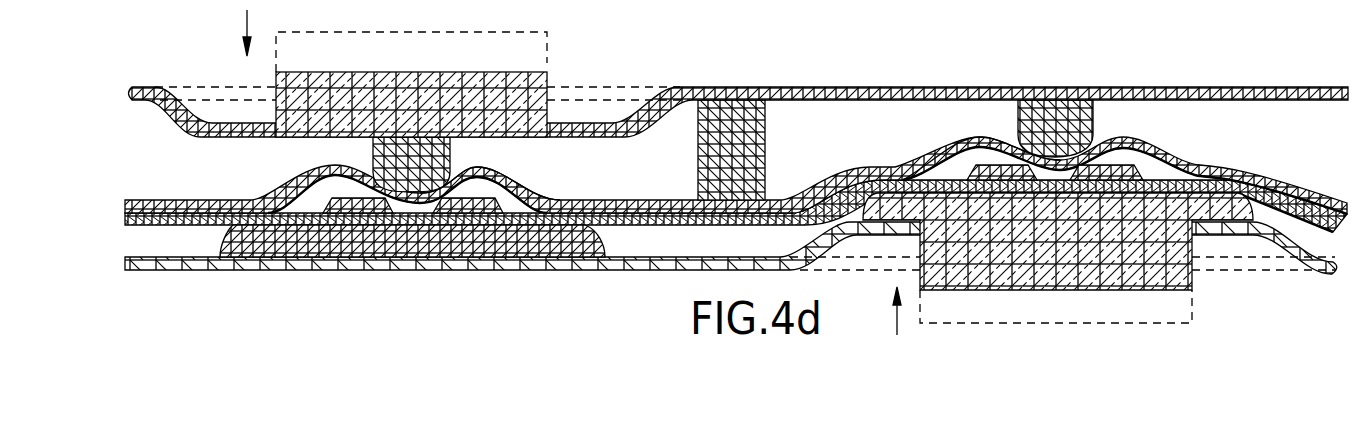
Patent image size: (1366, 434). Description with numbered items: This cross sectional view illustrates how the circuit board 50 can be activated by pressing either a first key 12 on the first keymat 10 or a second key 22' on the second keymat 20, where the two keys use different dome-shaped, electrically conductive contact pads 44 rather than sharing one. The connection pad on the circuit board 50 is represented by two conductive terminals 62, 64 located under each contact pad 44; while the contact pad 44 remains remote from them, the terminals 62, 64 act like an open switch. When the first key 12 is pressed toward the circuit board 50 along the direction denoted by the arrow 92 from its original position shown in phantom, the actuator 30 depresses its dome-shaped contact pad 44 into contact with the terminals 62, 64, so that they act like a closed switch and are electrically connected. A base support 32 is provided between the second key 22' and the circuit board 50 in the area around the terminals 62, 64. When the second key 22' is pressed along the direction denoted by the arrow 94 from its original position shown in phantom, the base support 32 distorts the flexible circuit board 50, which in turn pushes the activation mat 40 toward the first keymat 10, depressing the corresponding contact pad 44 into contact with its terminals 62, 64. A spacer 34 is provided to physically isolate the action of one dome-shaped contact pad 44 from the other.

The first keymat 10 is at (928, 87).
The first key 12 is at (550, 66).
The second keymat 20 is at (147, 270).
The second key 22' is at (1062, 258).
The actuator 30 is at (373, 140).
The base support 32 is at (606, 240).
The spacer 34 is at (767, 143).
The activation mat 40 is at (650, 200).
The dome-shaped, electrically conductive contact pad 44 is at (523, 181).
The circuit board 50 is at (135, 224).
The conductive terminal 62 is at (308, 178).
The conductive terminal 64 is at (502, 182).
The arrow 92 is at (247, 16).
The arrow 94 is at (896, 322).